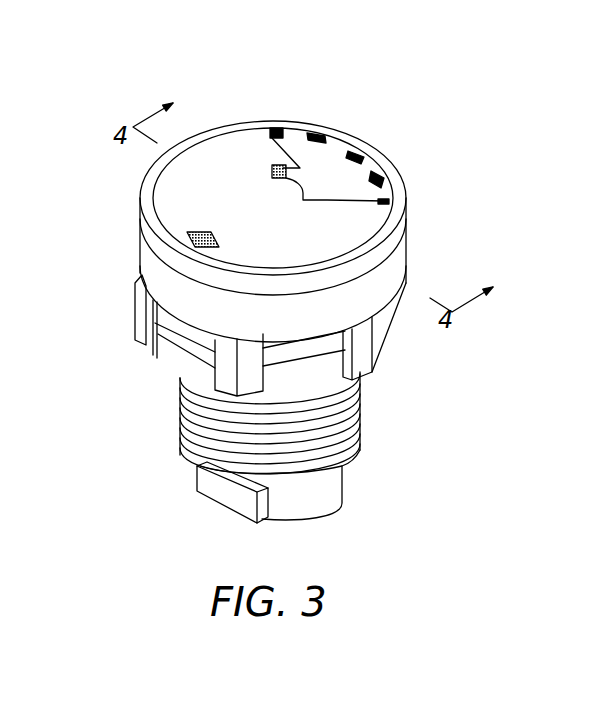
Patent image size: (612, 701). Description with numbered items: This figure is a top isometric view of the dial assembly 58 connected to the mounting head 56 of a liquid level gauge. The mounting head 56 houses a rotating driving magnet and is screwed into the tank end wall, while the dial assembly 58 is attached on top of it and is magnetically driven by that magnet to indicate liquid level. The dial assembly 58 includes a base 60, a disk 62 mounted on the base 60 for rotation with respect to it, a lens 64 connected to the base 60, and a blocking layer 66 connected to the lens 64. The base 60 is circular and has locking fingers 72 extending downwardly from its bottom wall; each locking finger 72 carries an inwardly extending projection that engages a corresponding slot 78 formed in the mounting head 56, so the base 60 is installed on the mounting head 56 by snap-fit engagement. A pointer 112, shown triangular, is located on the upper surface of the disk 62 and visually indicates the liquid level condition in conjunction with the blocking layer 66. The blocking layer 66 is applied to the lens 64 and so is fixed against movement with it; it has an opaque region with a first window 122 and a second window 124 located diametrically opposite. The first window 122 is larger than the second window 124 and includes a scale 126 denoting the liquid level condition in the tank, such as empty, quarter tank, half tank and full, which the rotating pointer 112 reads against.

The mounting head 56 is at (360, 416).
The dial assembly 58 is at (347, 121).
The base 60 is at (142, 253).
The disk 62 is at (380, 201).
The lens 64 is at (140, 221).
The blocking layer 66 is at (220, 150).
The locking fingers 72 is at (165, 323).
The slot 78 is at (182, 366).
The pointer 112 is at (294, 128).
The first window 122 is at (322, 188).
The second window 124 is at (193, 228).
The scale 126 is at (362, 147).